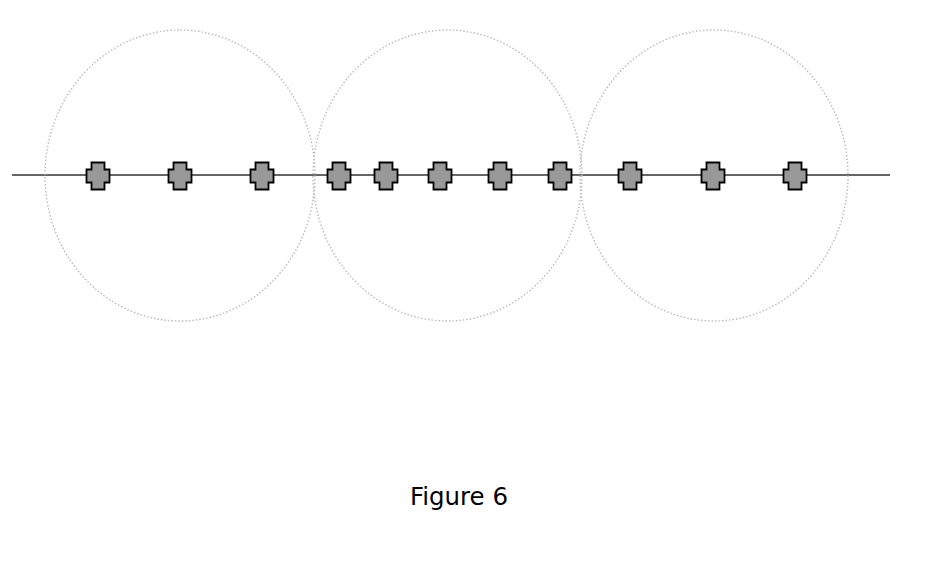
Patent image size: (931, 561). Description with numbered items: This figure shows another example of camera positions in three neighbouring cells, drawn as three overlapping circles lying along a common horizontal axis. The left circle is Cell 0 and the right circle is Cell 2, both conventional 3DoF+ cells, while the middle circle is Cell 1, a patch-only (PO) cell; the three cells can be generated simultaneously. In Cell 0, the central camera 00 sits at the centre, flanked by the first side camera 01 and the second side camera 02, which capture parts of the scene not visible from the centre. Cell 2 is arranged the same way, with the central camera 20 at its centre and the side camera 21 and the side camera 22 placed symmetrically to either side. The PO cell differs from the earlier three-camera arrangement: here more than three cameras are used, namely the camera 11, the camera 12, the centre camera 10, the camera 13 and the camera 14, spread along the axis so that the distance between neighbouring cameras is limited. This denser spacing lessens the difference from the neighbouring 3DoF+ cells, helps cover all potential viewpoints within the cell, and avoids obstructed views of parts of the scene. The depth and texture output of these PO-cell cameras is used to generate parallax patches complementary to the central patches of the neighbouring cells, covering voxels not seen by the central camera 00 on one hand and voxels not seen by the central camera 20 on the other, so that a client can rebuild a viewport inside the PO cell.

The Cell 0 is at (180, 208).
The Cell 1 is at (447, 209).
The Cell 2 is at (714, 208).
The camera C01 01 is at (100, 197).
The camera C00 00 is at (182, 197).
The camera C02 02 is at (262, 197).
The camera C11 11 is at (344, 197).
The camera C12 12 is at (391, 197).
The camera C10 10 is at (445, 197).
The camera C13 13 is at (501, 197).
The camera C14 14 is at (564, 197).
The camera C21 21 is at (631, 197).
The camera C20 20 is at (712, 197).
The camera C22 22 is at (794, 197).